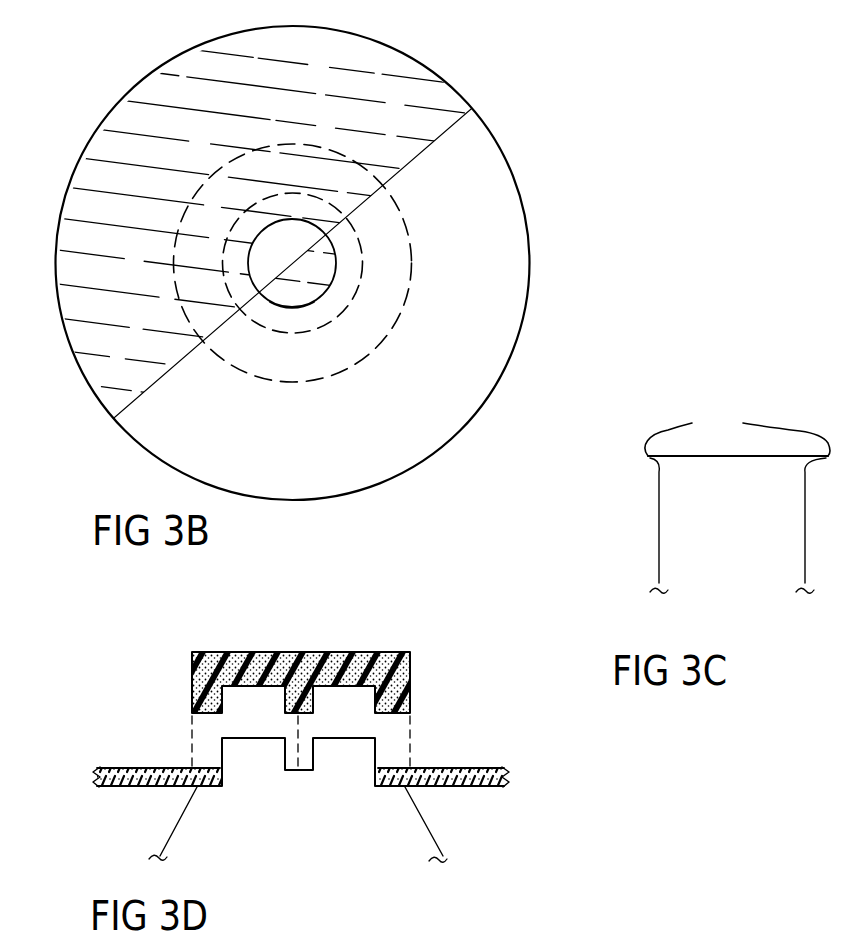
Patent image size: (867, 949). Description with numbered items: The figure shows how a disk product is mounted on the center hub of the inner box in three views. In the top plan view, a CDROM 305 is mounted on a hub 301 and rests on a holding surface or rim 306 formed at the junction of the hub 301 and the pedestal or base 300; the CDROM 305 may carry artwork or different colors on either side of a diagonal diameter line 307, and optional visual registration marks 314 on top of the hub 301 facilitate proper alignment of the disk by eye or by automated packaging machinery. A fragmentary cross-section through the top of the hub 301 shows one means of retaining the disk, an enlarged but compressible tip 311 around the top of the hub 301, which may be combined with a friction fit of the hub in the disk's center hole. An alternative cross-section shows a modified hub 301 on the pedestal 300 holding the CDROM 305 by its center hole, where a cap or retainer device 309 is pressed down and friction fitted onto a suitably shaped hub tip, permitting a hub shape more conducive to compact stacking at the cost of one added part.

In FIG. 3B, the pedestal or base 300 is at (378, 326).
In FIG. 3D, the pedestal or base 300 is at (433, 843).
In FIG. 3B, the hub 301 is at (277, 298).
In FIG. 3C, the hub 301 is at (732, 478).
In FIG. 3D, the hub 301 is at (308, 786).
In FIG. 3B, the CDROM 305 is at (531, 262).
In FIG. 3D, the CDROM 305 is at (160, 768).
In FIG. 3B, the holding surface or rim 306 is at (355, 258).
In FIG. 3B, the diagonal diameter line 307 is at (476, 107).
In FIG. 3D, the cap or retainer device 309 is at (410, 686).
In FIG. 3C, the enlarged compressible tip 311 is at (737, 428).
In FIG. 3B, the visual registration marks 314 is at (302, 308).